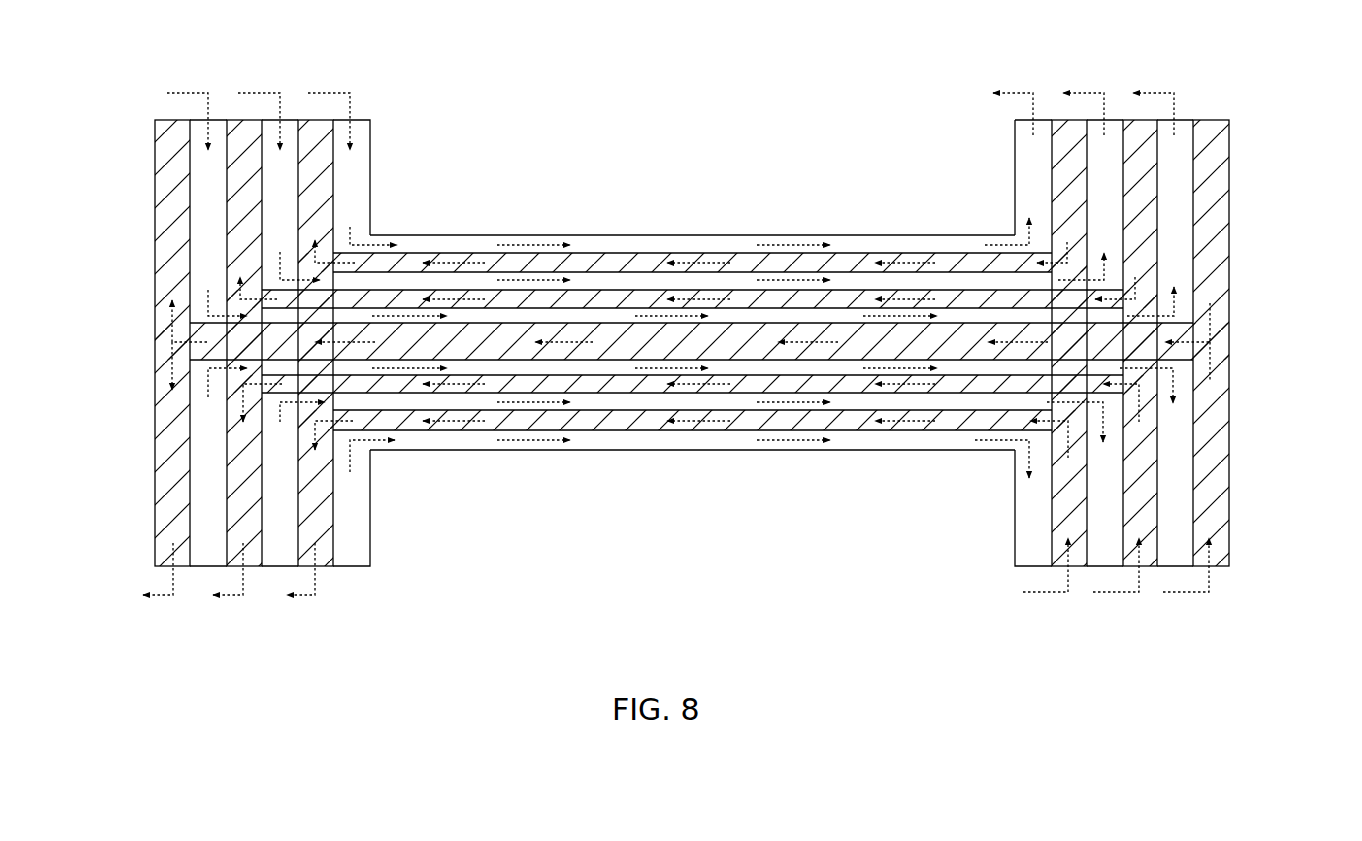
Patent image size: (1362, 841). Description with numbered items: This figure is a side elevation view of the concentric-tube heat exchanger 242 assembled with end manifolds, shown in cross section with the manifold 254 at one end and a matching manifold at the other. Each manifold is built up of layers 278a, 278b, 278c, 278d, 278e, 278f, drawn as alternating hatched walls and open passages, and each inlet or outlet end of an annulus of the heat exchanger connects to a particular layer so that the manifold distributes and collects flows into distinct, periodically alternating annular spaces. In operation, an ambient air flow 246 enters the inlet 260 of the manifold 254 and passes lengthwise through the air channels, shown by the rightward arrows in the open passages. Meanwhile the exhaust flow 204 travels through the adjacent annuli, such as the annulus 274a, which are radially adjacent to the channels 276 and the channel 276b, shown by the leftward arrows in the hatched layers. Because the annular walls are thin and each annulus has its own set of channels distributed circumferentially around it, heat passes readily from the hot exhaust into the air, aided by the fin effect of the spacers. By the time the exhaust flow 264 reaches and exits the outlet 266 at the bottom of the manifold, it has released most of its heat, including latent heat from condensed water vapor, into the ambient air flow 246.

The exhaust flow 204 is at (1040, 592).
The heat exchanger 242 is at (582, 228).
The ambient air flow 246 is at (185, 92).
The manifold 254 is at (153, 472).
The inlet 260 is at (198, 128).
The exhaust flow 264 is at (307, 598).
The outlet 266 is at (322, 555).
The annulus 274a is at (438, 245).
The channels 276 is at (408, 420).
The channel 276b is at (640, 262).
The manifold layer 278a is at (170, 170).
The manifold layer 278b is at (203, 220).
The manifold layer 278c is at (237, 277).
The manifold layer 278d is at (1215, 245).
The manifold layer 278e is at (1185, 198).
The manifold layer 278f is at (1152, 157).